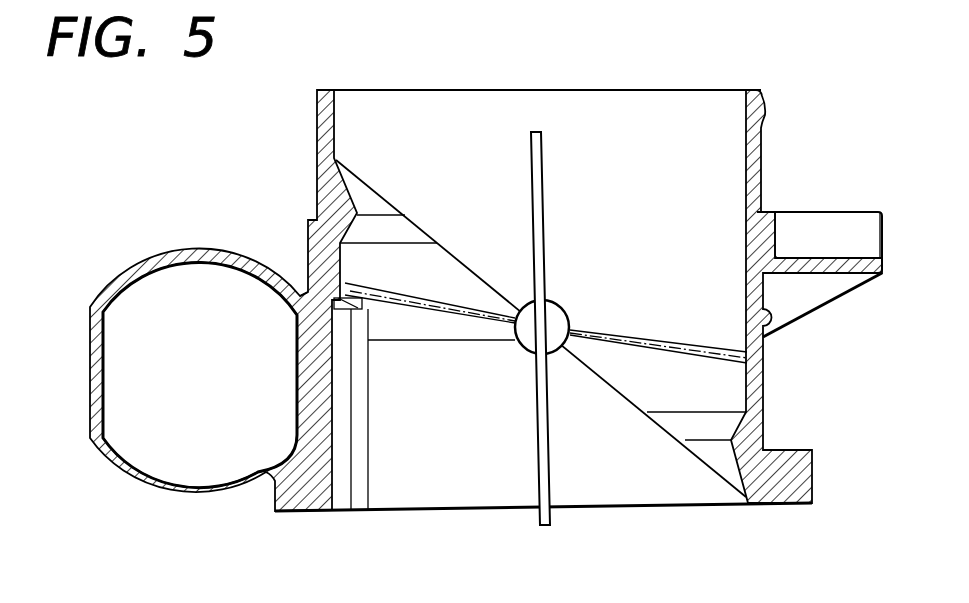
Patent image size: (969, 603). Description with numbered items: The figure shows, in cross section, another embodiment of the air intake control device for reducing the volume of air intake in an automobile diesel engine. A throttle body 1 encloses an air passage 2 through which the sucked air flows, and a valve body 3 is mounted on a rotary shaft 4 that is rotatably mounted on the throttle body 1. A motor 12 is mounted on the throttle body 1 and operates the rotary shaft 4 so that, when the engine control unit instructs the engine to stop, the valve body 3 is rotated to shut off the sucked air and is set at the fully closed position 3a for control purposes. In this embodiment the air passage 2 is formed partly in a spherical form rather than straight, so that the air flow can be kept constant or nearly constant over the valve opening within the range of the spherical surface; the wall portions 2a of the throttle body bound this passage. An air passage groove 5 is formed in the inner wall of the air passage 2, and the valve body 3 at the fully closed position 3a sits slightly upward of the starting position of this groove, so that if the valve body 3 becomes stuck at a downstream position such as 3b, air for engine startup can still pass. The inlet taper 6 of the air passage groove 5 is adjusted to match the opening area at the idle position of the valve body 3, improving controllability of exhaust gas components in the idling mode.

The throttle body 1 is at (762, 236).
The air passage 2 is at (634, 165).
The side wall 2a is at (390, 227).
The valve body 3 is at (547, 190).
The fully closed position for control purposes 3a is at (450, 307).
The stuck position of valve body 3b is at (392, 313).
The rotary shaft 4 is at (565, 352).
The air passage groove 5 is at (276, 502).
The inlet taper 6 is at (297, 310).
The motor 12 is at (163, 362).